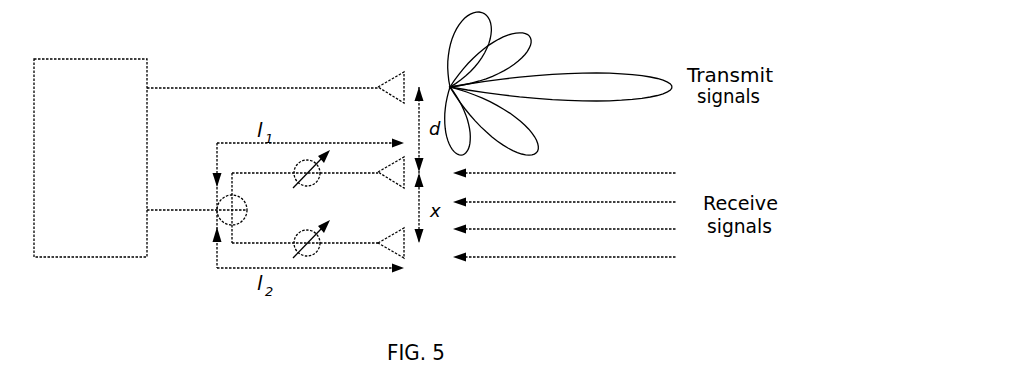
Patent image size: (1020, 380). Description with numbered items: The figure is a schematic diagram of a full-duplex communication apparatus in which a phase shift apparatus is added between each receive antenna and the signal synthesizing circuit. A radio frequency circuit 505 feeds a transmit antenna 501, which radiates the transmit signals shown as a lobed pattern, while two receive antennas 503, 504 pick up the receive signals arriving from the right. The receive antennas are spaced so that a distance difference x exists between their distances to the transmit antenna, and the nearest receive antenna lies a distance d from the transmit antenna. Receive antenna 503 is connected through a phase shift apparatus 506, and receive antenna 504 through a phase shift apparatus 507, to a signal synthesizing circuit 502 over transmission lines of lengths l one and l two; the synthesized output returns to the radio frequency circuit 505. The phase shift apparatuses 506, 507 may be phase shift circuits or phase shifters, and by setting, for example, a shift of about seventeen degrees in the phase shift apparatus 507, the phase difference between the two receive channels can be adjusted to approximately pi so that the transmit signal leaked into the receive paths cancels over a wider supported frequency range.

The transmit antenna 501 is at (393, 99).
The signal synthesizing circuit 502 is at (210, 207).
The receive antenna 503 is at (388, 183).
The receive antenna 504 is at (393, 261).
The radio frequency circuit 505 is at (90, 158).
The phase shift apparatus 506 is at (291, 173).
The phase shift apparatus 507 is at (291, 238).